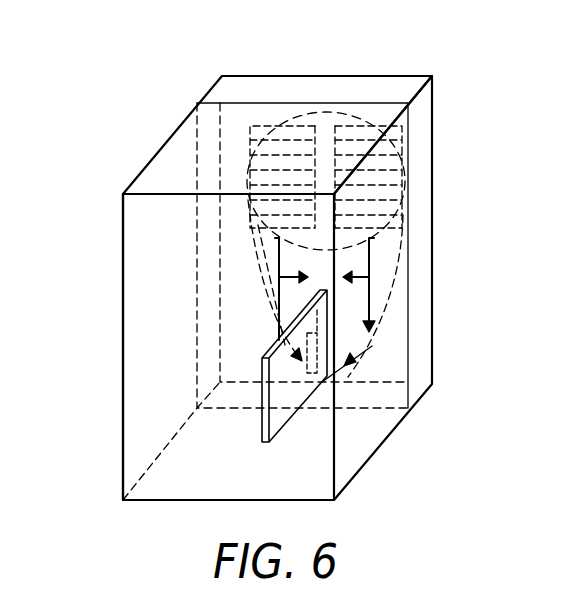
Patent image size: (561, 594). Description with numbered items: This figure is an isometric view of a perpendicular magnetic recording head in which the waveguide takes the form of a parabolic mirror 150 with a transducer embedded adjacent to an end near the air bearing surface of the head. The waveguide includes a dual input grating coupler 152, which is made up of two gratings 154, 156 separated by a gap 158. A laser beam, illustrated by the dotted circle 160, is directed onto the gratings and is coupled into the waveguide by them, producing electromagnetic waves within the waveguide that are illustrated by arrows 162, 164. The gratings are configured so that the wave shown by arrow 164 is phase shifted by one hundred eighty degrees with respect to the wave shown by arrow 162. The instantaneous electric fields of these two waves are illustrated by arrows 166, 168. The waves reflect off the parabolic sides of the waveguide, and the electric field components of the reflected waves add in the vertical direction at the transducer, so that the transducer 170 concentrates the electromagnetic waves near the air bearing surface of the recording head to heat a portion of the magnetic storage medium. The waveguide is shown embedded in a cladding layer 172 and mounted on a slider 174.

The parabolic mirror 150 is at (387, 316).
The dual input grating coupler 152 is at (397, 86).
The grating 154 is at (292, 140).
The grating 156 is at (366, 132).
The gap 158 is at (327, 133).
The laser beam 160 is at (244, 187).
The arrow 162 is at (278, 258).
The arrow 164 is at (372, 252).
The arrow 166 is at (281, 282).
The arrow 168 is at (365, 277).
The transducer 170 is at (372, 346).
The cladding layer 172 is at (232, 92).
The slider 174 is at (123, 423).